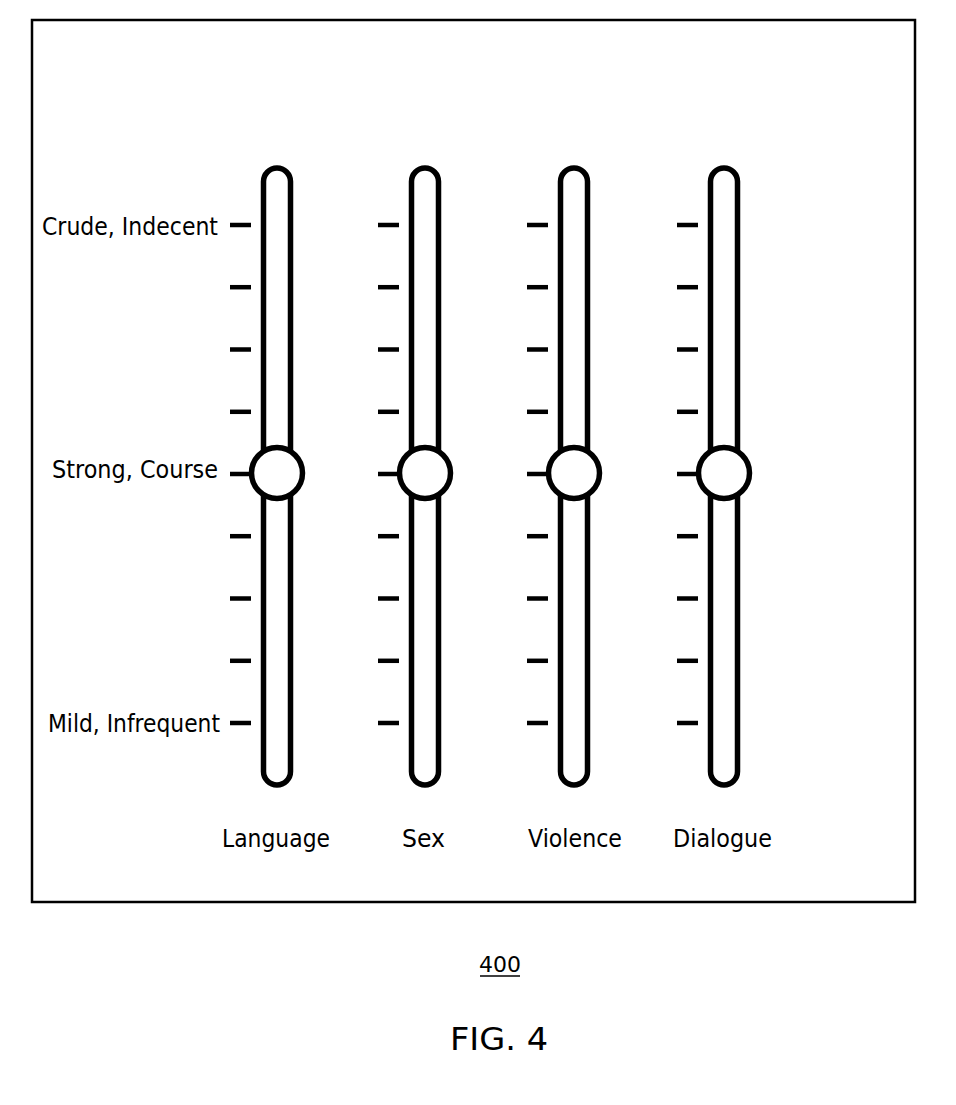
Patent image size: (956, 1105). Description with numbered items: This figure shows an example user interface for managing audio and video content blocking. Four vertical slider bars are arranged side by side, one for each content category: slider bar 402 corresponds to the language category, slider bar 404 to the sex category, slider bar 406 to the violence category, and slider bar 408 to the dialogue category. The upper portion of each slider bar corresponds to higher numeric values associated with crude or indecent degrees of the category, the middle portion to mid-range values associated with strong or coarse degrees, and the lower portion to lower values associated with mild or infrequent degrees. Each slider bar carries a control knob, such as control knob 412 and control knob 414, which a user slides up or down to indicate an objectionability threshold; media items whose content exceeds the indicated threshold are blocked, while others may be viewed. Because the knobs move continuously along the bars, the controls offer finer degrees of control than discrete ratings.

The slider bar 402 is at (277, 168).
The slider bar 404 is at (425, 168).
The slider bar 406 is at (574, 168).
The slider bar 408 is at (724, 168).
The control knob 412 is at (294, 448).
The control knob 414 is at (442, 448).